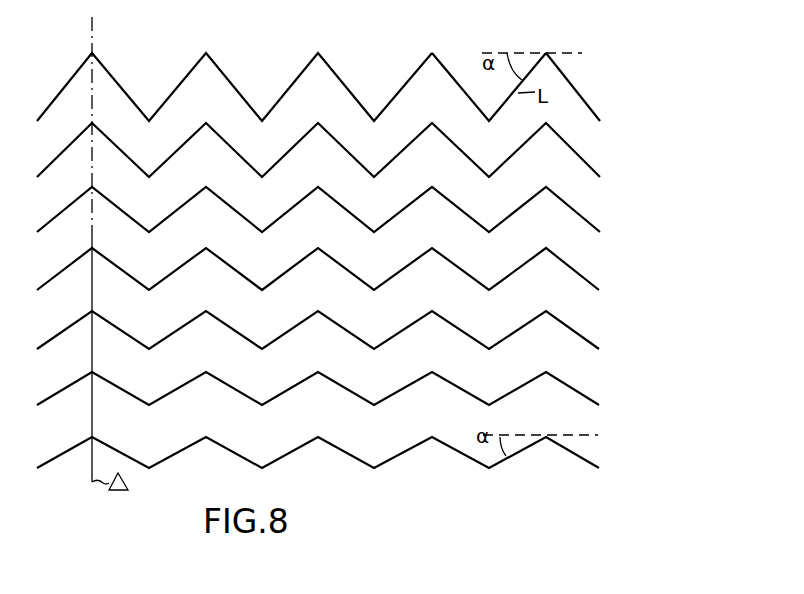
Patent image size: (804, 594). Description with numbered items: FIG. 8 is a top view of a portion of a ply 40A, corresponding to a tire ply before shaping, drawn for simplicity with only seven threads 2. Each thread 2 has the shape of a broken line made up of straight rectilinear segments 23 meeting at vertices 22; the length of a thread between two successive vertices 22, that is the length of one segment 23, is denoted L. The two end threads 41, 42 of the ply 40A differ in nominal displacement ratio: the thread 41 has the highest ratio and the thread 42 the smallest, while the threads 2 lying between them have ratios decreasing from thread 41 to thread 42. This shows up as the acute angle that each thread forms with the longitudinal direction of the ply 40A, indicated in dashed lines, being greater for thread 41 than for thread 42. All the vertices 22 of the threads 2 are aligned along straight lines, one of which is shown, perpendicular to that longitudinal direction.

The thread 2 is at (318, 262).
The vertex 22 is at (93, 53).
The rectilinear segment 23 is at (489, 122).
The ply 40A is at (358, 262).
The thread 41 is at (318, 92).
The thread 42 is at (456, 476).